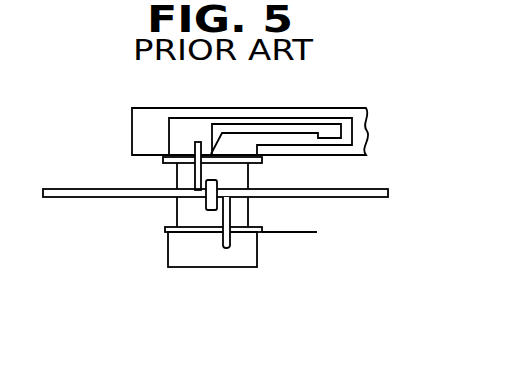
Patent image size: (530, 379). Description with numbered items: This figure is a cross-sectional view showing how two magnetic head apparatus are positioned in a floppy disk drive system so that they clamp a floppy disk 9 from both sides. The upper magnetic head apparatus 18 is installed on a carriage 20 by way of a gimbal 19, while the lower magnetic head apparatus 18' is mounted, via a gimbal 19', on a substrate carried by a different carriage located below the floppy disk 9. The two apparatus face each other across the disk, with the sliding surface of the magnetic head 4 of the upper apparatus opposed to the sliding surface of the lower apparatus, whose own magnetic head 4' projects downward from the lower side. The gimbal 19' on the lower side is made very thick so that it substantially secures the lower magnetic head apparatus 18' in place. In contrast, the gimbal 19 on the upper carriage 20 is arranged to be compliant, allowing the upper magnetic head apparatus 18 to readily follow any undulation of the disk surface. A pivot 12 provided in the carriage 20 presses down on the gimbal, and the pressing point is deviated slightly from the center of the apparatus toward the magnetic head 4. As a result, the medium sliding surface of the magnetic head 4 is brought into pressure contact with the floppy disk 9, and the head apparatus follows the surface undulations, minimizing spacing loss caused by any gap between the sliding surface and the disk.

The magnetic head 4 is at (180, 129).
The magnetic head 4' is at (233, 253).
The floppy disk 9 is at (65, 199).
The pivot 12 is at (250, 132).
The magnetic head apparatus 18 is at (246, 173).
The magnetic head apparatus 18' is at (258, 215).
The gimbal 19 is at (130, 171).
The gimbal 19' is at (132, 224).
The carriage 20 is at (138, 133).